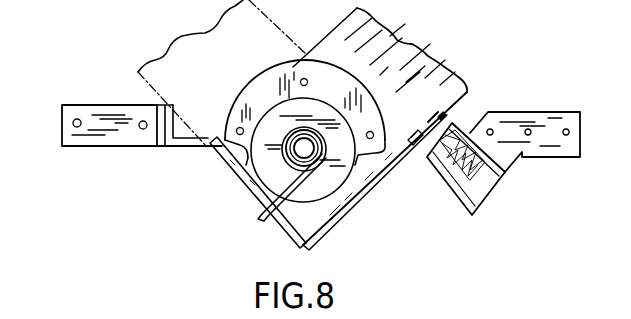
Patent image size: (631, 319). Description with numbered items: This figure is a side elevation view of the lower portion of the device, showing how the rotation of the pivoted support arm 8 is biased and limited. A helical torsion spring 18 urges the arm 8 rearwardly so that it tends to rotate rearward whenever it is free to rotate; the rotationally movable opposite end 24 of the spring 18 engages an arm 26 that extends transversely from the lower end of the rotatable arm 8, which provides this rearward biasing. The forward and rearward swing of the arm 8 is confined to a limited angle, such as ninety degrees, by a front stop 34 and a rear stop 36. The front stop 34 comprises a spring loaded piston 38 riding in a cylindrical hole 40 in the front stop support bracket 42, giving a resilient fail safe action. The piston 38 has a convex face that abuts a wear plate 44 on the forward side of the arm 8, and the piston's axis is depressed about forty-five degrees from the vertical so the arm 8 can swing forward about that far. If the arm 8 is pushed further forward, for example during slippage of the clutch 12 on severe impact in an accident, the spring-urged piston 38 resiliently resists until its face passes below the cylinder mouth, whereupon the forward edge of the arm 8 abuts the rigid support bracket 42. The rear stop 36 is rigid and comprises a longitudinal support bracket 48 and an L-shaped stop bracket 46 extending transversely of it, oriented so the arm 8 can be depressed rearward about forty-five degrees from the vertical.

The rotatable support arm 8 is at (402, 50).
The clutch 12 is at (343, 156).
The helical torsion spring 18 is at (342, 207).
The opposite end of spring 24 is at (258, 216).
The arm 26 is at (286, 220).
The front stop 34 is at (440, 163).
The rear stop 36 is at (167, 148).
The spring loaded piston 38 is at (460, 132).
The cylindrical hole 40 is at (493, 173).
The front stop support bracket 42 is at (537, 113).
The wear plate 44 is at (435, 118).
The L-shaped stop bracket 46 is at (190, 148).
The longitudinal support bracket 48 is at (103, 148).